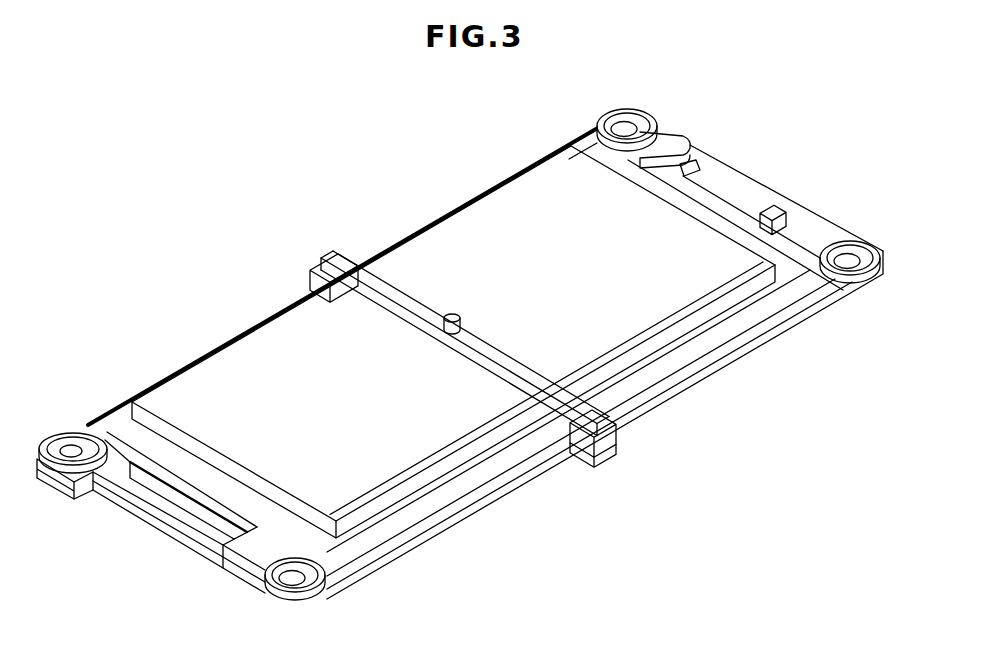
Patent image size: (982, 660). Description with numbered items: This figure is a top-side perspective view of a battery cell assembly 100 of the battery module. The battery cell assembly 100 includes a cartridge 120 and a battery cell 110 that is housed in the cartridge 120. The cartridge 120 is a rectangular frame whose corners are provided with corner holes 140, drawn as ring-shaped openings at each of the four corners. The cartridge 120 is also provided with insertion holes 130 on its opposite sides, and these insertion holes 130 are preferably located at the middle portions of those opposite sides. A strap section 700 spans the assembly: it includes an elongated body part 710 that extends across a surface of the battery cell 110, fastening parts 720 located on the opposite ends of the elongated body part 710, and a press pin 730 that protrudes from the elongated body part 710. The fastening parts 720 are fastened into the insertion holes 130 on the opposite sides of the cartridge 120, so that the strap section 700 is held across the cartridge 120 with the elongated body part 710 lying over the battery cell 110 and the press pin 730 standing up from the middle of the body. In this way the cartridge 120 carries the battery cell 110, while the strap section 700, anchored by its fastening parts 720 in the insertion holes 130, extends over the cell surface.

The battery cell assembly 100 is at (224, 270).
The battery cell 110 is at (183, 393).
The cartridge 120 is at (388, 552).
The insertion holes 130 is at (600, 466).
The corner holes 140 is at (855, 240).
The strap section 700 is at (449, 162).
The elongated body part 710 is at (377, 262).
The fastening parts 720 is at (313, 274).
The press pin 730 is at (450, 313).